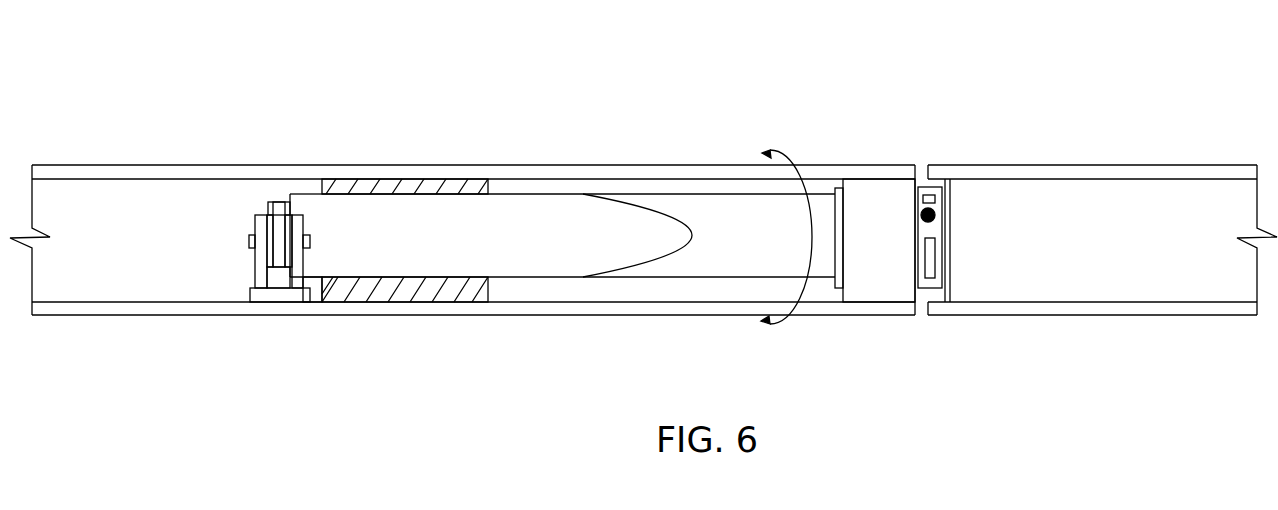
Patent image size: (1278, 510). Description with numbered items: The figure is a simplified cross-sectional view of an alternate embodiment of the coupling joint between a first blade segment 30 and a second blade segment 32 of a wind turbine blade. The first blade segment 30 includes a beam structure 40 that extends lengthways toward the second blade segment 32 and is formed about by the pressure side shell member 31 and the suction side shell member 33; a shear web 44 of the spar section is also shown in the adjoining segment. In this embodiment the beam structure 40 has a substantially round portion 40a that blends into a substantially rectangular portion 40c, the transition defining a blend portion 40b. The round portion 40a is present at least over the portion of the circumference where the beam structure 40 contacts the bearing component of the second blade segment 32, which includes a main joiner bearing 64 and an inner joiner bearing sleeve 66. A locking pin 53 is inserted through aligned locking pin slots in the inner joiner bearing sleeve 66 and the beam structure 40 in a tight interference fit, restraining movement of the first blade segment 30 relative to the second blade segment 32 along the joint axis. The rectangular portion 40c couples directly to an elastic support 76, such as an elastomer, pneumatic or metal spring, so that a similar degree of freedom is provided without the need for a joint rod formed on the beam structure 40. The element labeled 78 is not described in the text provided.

The first blade segment 30 is at (1102, 250).
The pressure side shell member 31 is at (193, 165).
The second blade segment 32 is at (462, 245).
The suction side shell member 33 is at (113, 315).
The beam structure 40 is at (566, 196).
The round portion 40a is at (843, 147).
The blend portion 40b is at (675, 147).
The rectangular portion 40c is at (547, 147).
The shear web 44 is at (1080, 188).
The locking pin 53 is at (921, 188).
The main joiner bearing 64 is at (880, 293).
The inner joiner bearing sleeve 66 is at (928, 278).
The elastic support 76 is at (430, 290).
The drive assembly 78 is at (280, 288).